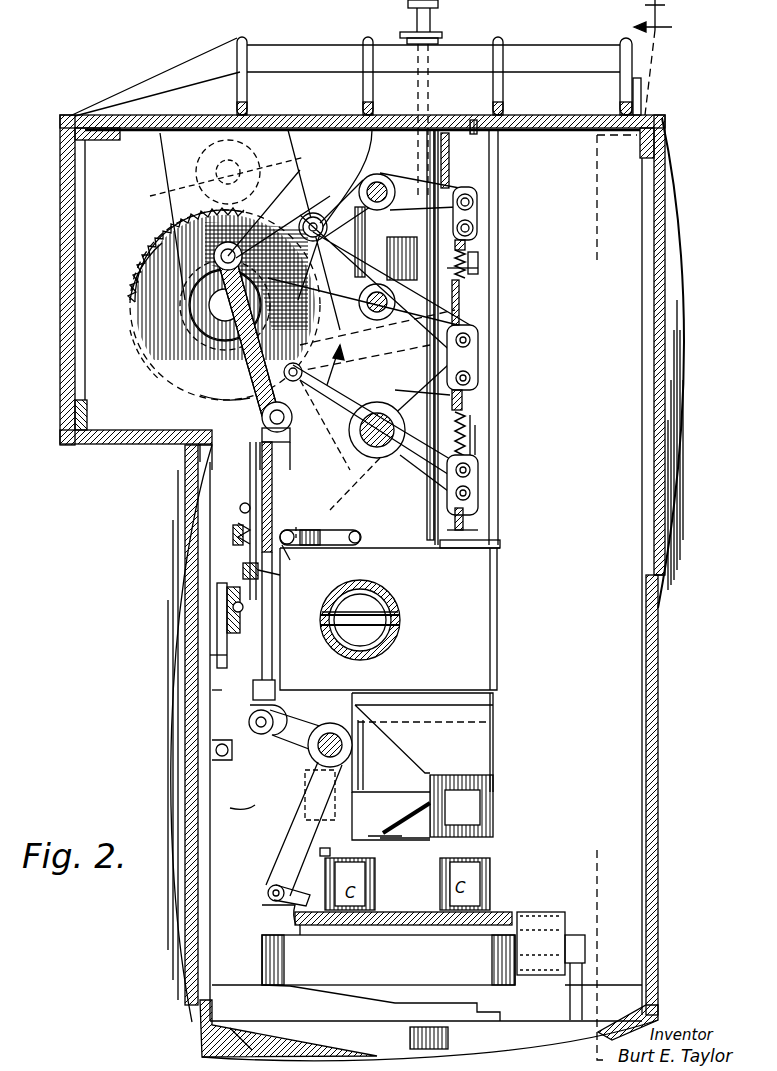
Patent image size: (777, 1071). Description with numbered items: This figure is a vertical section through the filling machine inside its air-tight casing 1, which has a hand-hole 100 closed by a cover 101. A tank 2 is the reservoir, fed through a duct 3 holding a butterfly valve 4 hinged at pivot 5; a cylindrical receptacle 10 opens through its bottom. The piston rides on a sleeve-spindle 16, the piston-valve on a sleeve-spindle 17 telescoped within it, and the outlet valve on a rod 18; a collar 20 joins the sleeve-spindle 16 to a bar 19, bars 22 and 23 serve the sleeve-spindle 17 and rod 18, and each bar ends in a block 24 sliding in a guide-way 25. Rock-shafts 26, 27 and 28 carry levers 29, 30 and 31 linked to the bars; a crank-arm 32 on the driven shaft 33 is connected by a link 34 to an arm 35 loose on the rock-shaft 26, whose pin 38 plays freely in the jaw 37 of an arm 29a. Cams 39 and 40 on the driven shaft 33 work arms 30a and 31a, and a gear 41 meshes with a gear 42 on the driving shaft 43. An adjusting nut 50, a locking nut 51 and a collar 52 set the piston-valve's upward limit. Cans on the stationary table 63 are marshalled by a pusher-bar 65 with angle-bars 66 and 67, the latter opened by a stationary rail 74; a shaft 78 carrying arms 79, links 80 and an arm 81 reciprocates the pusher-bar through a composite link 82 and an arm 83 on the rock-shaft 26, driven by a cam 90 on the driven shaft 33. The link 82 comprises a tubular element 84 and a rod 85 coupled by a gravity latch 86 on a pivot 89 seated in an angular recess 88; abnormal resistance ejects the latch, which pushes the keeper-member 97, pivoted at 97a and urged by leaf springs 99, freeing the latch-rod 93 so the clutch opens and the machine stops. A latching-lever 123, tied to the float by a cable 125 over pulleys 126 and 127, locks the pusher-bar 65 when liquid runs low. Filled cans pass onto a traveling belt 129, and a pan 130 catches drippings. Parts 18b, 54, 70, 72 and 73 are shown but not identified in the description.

The casing 1 is at (656, 845).
The tank 2 is at (388, 670).
The duct 3 is at (390, 602).
The butter-fly valve 4 is at (388, 594).
The valve pivot 5 is at (398, 612).
The receptacle 10 is at (461, 806).
The sleeve-spindle 16 is at (470, 547).
The sleeve-spindle 17 is at (482, 437).
The rod 18 is at (484, 315).
The pin 18b is at (500, 275).
The bar 19 is at (478, 530).
The collar 20 is at (455, 548).
The bar 22 is at (484, 405).
The bar 23 is at (475, 252).
The block 24 is at (484, 220).
The guide-way 25 is at (486, 297).
The rock-shaft 26 is at (372, 458).
The rock-shaft 27 is at (368, 345).
The rock-shaft 28 is at (366, 180).
The lever 29 is at (412, 470).
The arm 29a is at (375, 344).
The lever 30 is at (412, 397).
The arm 30a is at (375, 286).
The lever 31 is at (466, 185).
The arm 31a is at (215, 378).
The crank-arm 32 is at (150, 262).
The driven shaft 33 is at (195, 305).
The link 34 is at (235, 390).
The arm 35 is at (318, 445).
The jaw 37 is at (290, 382).
The pin 38 is at (262, 432).
The cam 39 is at (313, 213).
The cam 40 is at (185, 370).
The gear 41 is at (160, 255).
The gear 42 is at (216, 172).
The driving shaft 43 is at (266, 230).
The adjusting nut 50 is at (520, 420).
The locking nut 51 is at (422, 399).
The collar 52 is at (520, 428).
The spring 54 is at (472, 262).
The table 63 is at (372, 925).
The pusher-bar 65 is at (318, 925).
The angle-bar 66 is at (350, 884).
The angle-bar 67 is at (378, 856).
The catch 70 is at (330, 852).
The pin 72 is at (302, 935).
The link 73 is at (289, 888).
The stationary rail 74 is at (406, 830).
The shaft 78 is at (315, 760).
The arm 79 is at (290, 826).
The link 80 is at (290, 910).
The arm 81 is at (290, 740).
The composite link 82 is at (233, 625).
The tubular element 84 is at (258, 512).
The rod 85 is at (272, 640).
The latch 86 is at (245, 545).
The recess 88 is at (283, 577).
The pivot 89 is at (240, 508).
The cam 90 is at (138, 366).
The latch-rod 93 is at (225, 608).
The keeper-member 97 is at (210, 655).
The pivot 97a is at (215, 750).
The leaf springs 99 is at (212, 692).
The hand-hole 100 is at (644, 578).
The cover 101 is at (684, 508).
The latching-lever 123 is at (262, 985).
The cable 125 is at (282, 663).
The pulley 126 is at (305, 558).
The pulley 127 is at (362, 538).
The traveling belt 129 is at (550, 912).
The pan 130 is at (388, 992).
The arm 83 is at (346, 360).